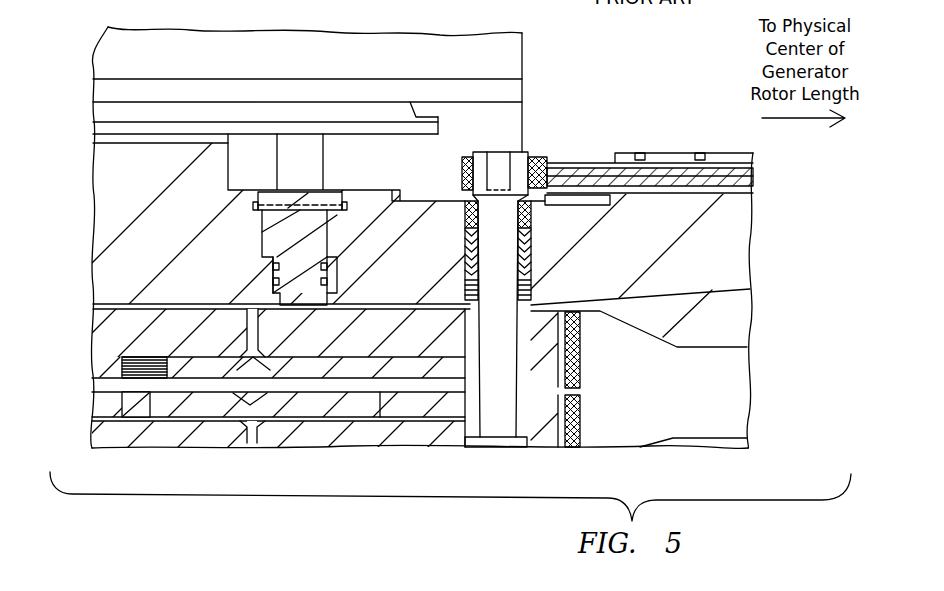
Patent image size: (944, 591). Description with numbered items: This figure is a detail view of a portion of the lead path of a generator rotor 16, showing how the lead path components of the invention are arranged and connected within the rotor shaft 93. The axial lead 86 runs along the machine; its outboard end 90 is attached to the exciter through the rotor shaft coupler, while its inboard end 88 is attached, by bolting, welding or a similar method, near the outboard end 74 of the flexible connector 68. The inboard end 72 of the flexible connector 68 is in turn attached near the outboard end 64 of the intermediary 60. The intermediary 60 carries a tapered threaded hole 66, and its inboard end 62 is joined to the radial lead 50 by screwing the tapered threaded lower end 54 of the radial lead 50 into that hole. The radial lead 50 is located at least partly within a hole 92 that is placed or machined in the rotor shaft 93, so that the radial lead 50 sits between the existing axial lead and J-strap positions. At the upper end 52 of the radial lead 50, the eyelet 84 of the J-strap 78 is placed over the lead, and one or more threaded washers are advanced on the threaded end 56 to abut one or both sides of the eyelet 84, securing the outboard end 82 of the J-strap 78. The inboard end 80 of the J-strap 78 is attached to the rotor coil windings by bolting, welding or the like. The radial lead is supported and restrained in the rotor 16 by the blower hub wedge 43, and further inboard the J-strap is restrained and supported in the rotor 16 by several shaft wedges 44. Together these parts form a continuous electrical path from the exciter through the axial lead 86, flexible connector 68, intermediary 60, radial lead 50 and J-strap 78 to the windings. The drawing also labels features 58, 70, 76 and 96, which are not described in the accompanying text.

The rotor 16 is at (715, 325).
The blower hub wedge 43 is at (267, 120).
The shaft wedges 44 is at (620, 153).
The radial lead 50 is at (502, 220).
The upper end of radial lead 52 is at (517, 152).
The lower end of radial lead 54 is at (500, 372).
The threaded end of radial lead 56 is at (533, 160).
The rotor tooth block 58 is at (548, 378).
The intermediary 60 is at (403, 320).
The inboard end of intermediary 62 is at (550, 335).
The outboard end of intermediary 64 is at (257, 302).
The tapered threaded hole 66 is at (507, 329).
The flexible connector 68 is at (197, 377).
The coil end block 70 is at (148, 345).
The inboard end of flexible connector 72 is at (342, 380).
The outboard end of flexible connector 74 is at (148, 371).
The end winding body 76 is at (262, 370).
The J-strap 78 is at (643, 177).
The inboard end of J-strap 80 is at (728, 175).
The outboard end of J-strap 82 is at (553, 170).
The eyelet 84 is at (463, 172).
The axial lead 86 is at (179, 316).
The inboard end of axial lead 88 is at (258, 338).
The outboard end of axial lead 90 is at (126, 334).
The hole 92 is at (415, 207).
The rotor shaft 93 is at (714, 228).
The bolt socket 96 is at (502, 165).